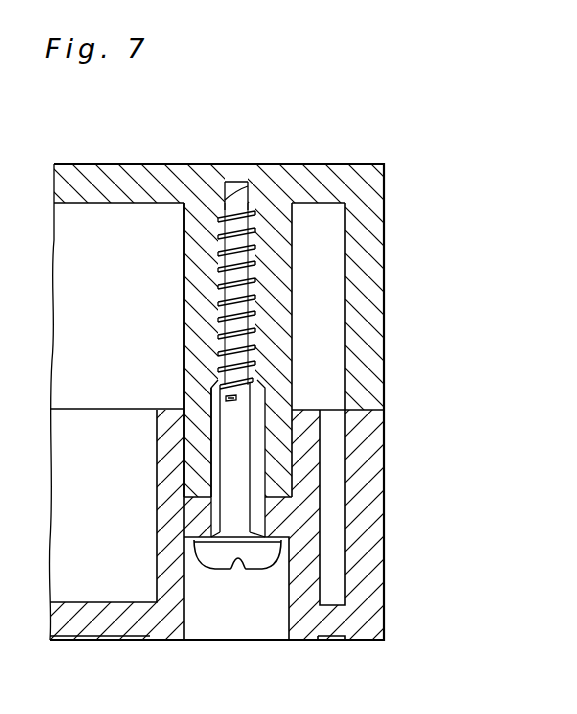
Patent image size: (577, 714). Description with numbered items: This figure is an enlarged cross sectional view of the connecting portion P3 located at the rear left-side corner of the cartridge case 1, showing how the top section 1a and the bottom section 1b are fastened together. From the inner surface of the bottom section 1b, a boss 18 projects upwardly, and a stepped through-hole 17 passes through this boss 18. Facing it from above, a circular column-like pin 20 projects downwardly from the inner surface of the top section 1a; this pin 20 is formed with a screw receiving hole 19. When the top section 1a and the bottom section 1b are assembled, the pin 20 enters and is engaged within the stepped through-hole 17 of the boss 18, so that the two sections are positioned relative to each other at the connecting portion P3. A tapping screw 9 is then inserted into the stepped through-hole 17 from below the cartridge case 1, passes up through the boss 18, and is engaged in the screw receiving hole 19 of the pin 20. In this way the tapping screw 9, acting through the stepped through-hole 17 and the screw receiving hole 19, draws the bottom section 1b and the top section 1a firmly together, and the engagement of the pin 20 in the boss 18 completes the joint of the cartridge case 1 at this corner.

The cartridge case 1 is at (372, 163).
The top section 1a is at (372, 203).
The bottom section 1b is at (373, 580).
The tapping screw 9 is at (242, 417).
The stepped through-hole 17 is at (194, 460).
The boss 18 is at (165, 515).
The screw receiving hole 19 is at (244, 183).
The pin 20 is at (196, 337).
The connecting portion P3 is at (300, 336).